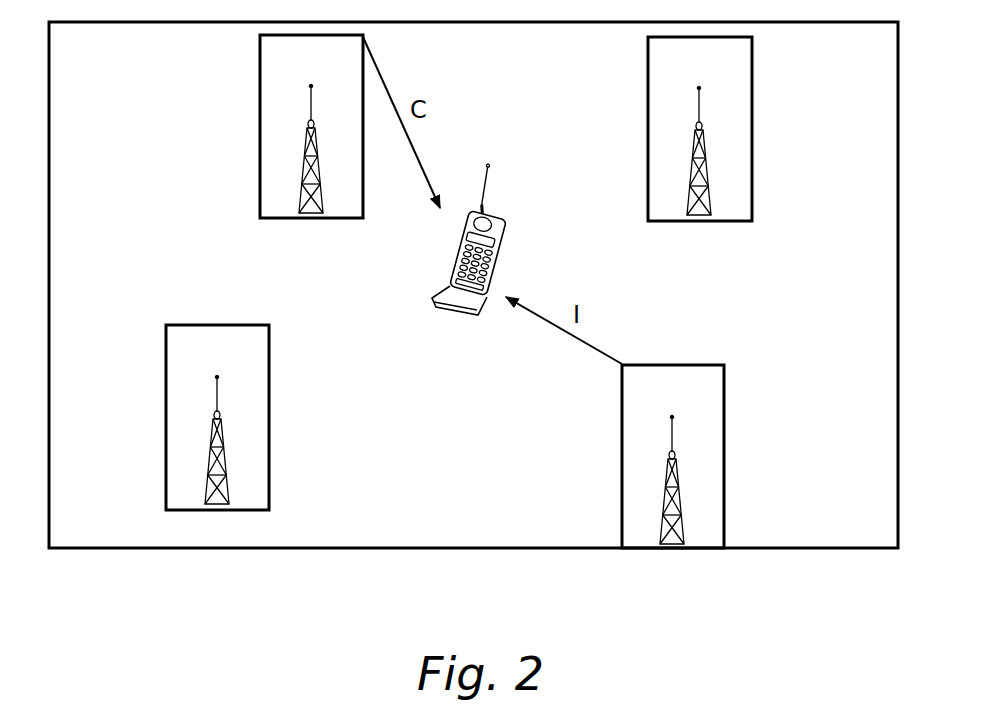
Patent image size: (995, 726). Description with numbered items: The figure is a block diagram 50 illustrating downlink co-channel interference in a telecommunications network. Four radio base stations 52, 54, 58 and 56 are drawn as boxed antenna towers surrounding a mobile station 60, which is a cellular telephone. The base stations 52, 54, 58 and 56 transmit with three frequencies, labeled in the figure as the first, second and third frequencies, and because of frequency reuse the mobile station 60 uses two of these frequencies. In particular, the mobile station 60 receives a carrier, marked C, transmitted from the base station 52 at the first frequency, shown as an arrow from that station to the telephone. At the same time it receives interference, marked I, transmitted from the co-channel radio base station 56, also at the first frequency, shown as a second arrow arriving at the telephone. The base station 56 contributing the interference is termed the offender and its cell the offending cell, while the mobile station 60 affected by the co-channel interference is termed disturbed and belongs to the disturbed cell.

The block diagram 50 is at (186, 600).
The radio base station 52 is at (260, 190).
The radio base station 54 is at (752, 100).
The radio base station 56 is at (724, 428).
The radio base station 58 is at (269, 389).
The mobile station 60 is at (424, 269).